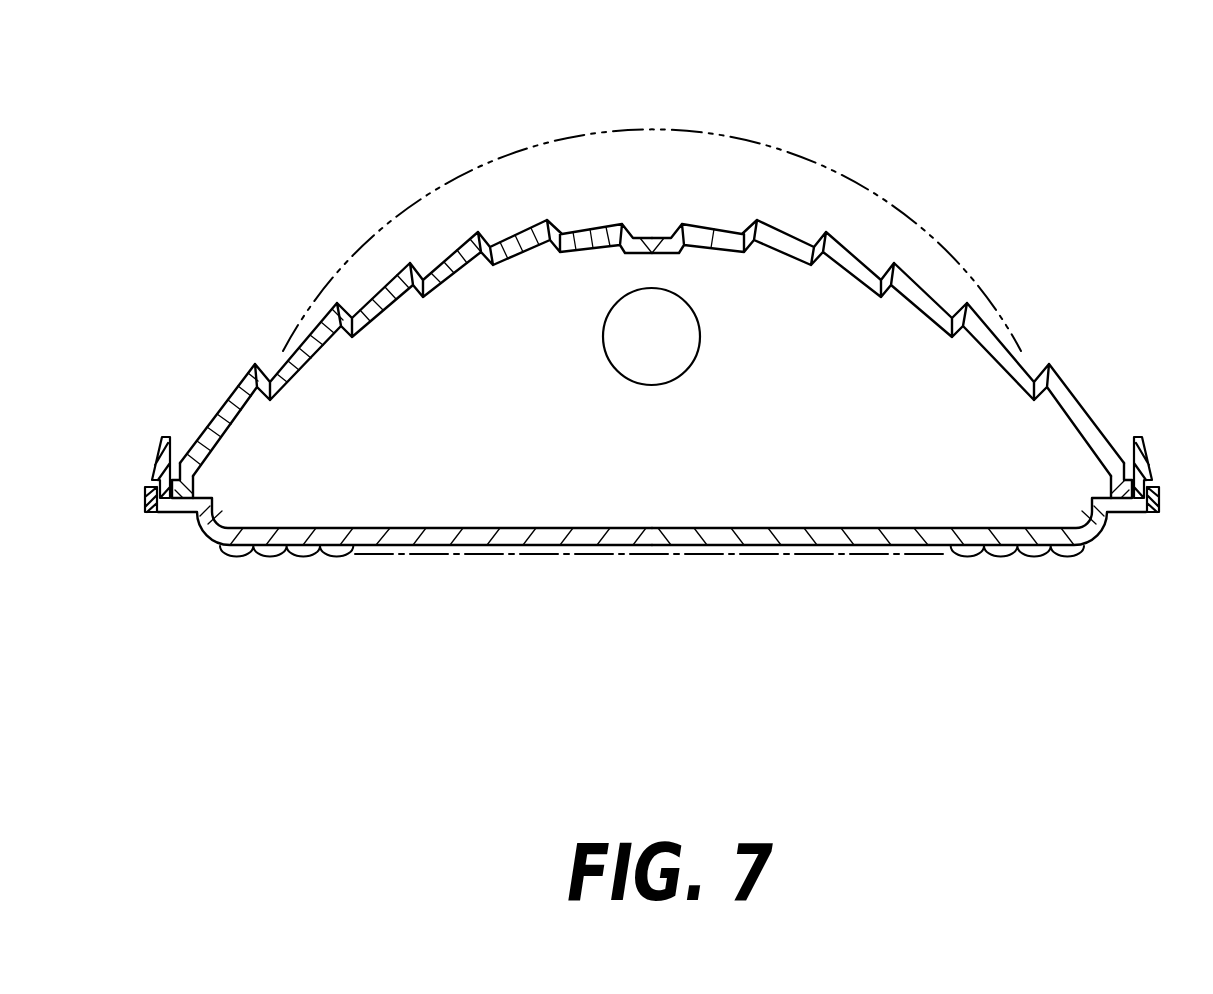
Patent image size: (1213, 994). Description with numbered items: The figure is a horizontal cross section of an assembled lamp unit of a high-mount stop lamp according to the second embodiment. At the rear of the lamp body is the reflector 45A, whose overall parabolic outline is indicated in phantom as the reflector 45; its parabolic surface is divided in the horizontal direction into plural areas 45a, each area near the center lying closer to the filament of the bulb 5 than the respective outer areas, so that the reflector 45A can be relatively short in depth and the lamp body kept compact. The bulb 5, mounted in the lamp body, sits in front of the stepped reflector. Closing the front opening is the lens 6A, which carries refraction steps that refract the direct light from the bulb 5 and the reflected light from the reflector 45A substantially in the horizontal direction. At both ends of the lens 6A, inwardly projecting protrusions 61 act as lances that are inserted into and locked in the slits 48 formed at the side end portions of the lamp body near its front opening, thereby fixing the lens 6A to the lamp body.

The reflector 45 is at (772, 153).
The areas 45a is at (594, 245).
The reflector 45A is at (810, 265).
The bulb 5 is at (676, 352).
The lens 6A is at (612, 542).
The protrusions 61 is at (160, 440).
The slits 48 is at (160, 514).